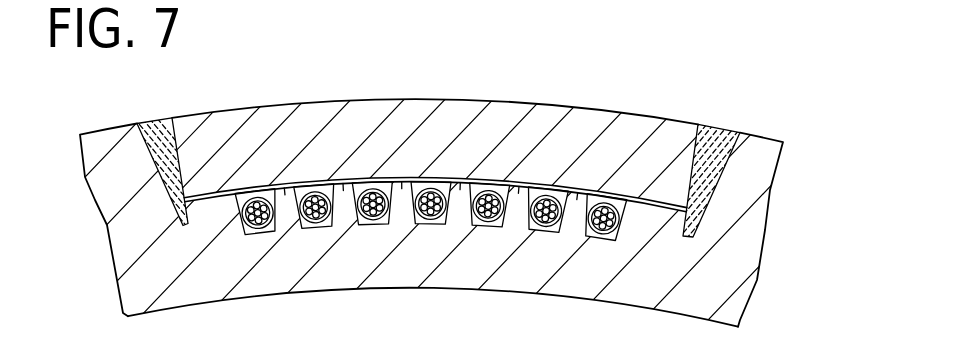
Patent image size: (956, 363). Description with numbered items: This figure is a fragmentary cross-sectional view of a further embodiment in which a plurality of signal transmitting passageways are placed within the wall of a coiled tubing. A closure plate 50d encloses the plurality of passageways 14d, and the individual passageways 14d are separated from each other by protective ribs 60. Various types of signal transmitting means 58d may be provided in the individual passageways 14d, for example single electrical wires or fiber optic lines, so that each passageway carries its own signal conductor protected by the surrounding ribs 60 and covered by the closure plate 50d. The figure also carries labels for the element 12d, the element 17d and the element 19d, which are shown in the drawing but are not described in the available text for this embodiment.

The base body / wall member 12d is at (773, 214).
The passageways 14d is at (490, 226).
The outer surface of body 17d is at (697, 320).
The dovetail locking key 19d is at (767, 139).
The closure plate 50d is at (637, 121).
The signal transmitting means 58d is at (308, 187).
The protective ribs 60 is at (458, 180).